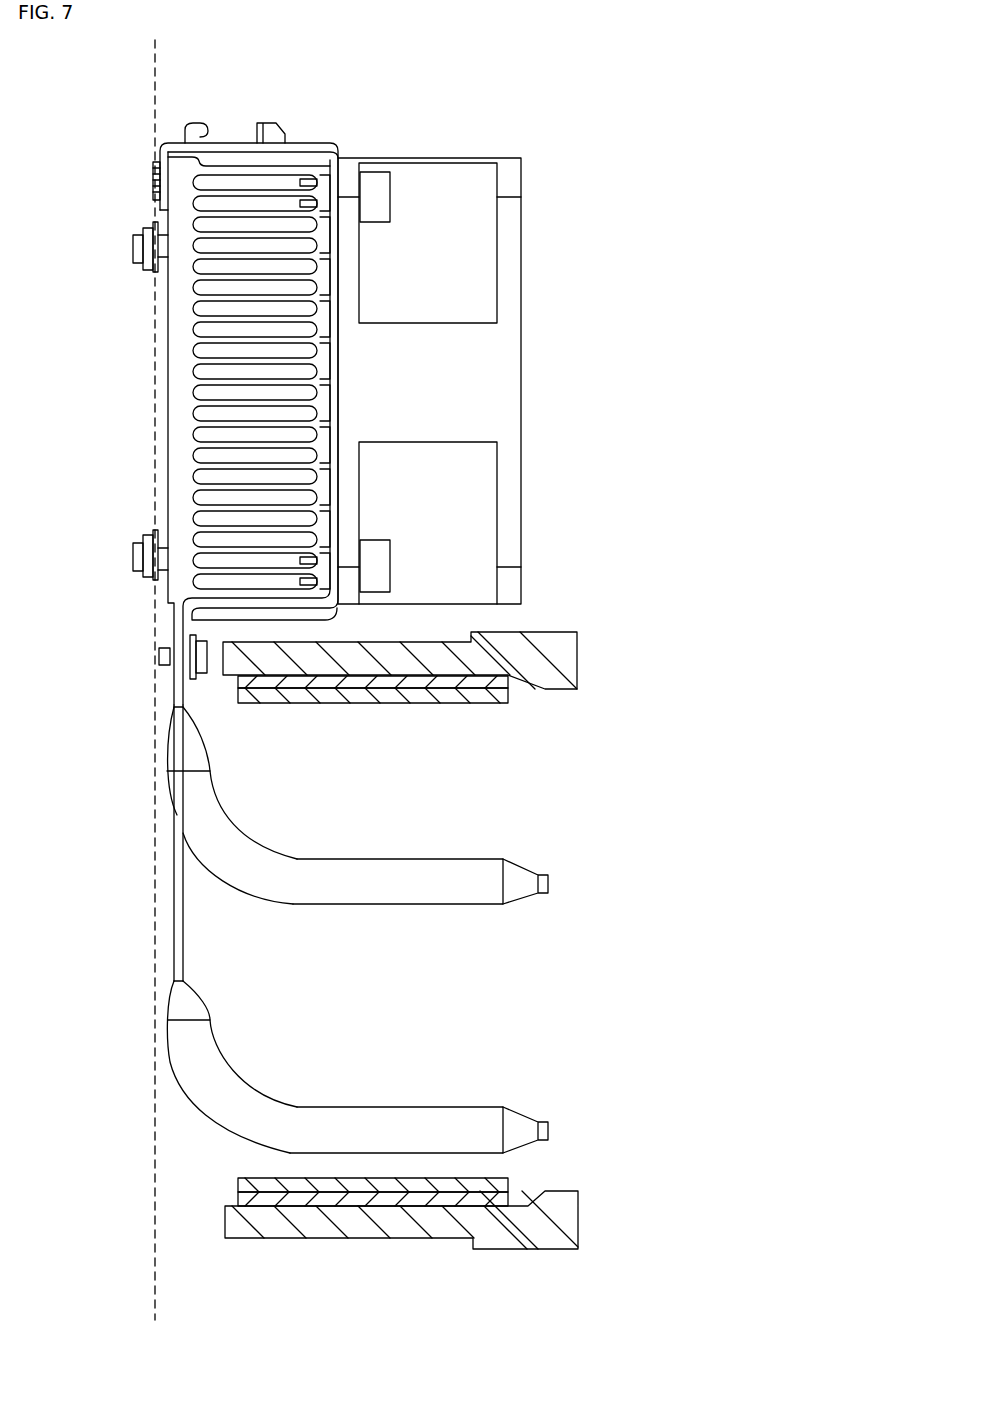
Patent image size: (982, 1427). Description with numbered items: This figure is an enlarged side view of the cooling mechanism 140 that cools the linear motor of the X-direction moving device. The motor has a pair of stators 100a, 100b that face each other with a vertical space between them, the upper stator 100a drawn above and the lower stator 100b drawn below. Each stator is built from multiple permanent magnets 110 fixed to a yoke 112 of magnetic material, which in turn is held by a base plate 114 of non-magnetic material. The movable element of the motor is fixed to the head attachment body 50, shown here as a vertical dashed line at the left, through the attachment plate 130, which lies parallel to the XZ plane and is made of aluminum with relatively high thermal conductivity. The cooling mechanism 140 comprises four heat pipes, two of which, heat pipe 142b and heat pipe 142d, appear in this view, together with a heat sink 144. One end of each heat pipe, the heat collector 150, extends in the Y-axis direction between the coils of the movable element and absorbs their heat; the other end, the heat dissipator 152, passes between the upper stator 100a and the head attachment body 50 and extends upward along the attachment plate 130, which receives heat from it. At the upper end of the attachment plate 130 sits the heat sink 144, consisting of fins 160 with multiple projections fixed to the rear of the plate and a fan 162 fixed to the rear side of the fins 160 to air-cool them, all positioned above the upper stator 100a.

The head attachment body 50 is at (157, 1303).
The stator 100a is at (583, 612).
The stator 100b is at (572, 1285).
The permanent magnet 110 is at (484, 696).
The yoke 112 is at (501, 683).
The base plate 114 is at (566, 652).
The attachment plate 130 is at (177, 627).
The cooling mechanism 140 is at (722, 162).
The heat pipe 142b is at (432, 938).
The heat pipe 142d is at (416, 1064).
The heat sink 144 is at (527, 106).
The heat collector 150 is at (443, 870).
The heat dissipator 152 is at (178, 940).
The fins 160 is at (233, 143).
The fan 162 is at (430, 158).